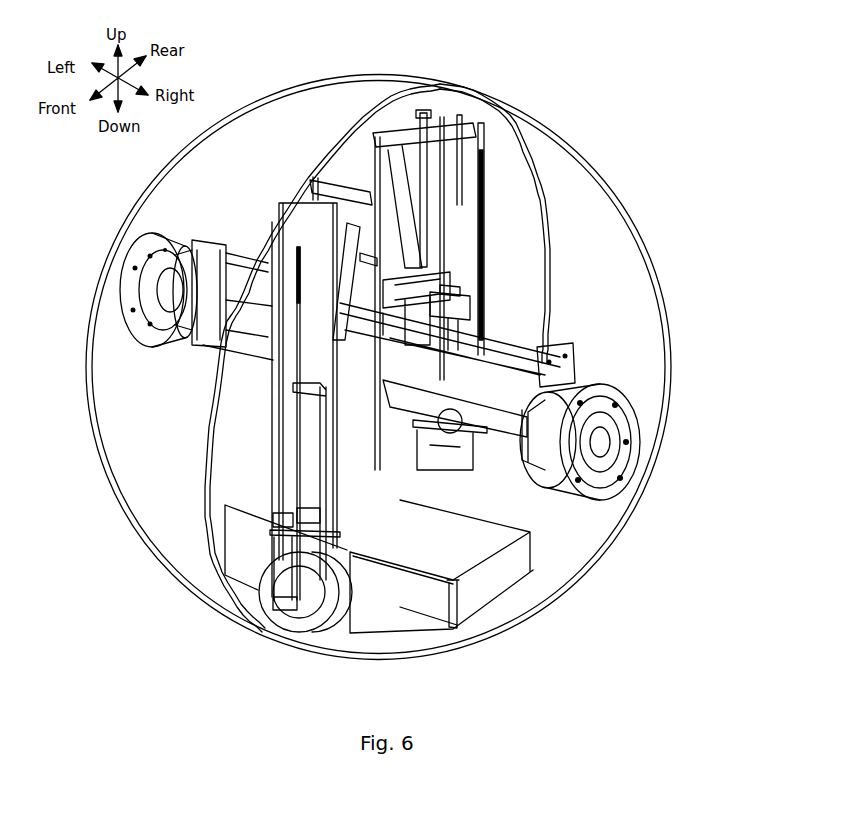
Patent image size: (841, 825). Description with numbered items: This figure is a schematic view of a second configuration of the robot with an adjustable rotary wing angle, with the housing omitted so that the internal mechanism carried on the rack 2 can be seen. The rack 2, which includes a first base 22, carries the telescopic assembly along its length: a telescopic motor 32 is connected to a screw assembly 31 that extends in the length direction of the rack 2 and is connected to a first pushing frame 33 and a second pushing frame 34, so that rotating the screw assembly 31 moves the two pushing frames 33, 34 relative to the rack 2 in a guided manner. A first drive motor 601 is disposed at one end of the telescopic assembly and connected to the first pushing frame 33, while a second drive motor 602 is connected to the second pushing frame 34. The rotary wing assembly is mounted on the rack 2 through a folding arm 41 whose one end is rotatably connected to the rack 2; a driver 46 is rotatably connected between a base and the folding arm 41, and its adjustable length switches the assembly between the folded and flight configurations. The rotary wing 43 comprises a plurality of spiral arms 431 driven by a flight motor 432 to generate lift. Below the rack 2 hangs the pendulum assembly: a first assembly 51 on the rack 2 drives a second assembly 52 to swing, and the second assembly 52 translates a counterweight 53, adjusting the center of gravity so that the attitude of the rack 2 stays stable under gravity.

The rack 2 is at (593, 499).
The first base 22 is at (378, 275).
The screw assembly 31 is at (440, 365).
The telescopic motor 32 is at (400, 298).
The first pushing frame 33 is at (487, 378).
The second pushing frame 34 is at (203, 345).
The folding arm 41 is at (288, 397).
The rotary wing 43 is at (195, 597).
The spiral arms 431 is at (283, 548).
The flight motor 432 is at (290, 625).
The driver 46 is at (362, 190).
The first assembly 51 is at (425, 333).
The second assembly 52 is at (460, 580).
The counterweight 53 is at (397, 610).
The first drive motor 601 is at (553, 433).
The second drive motor 602 is at (180, 279).